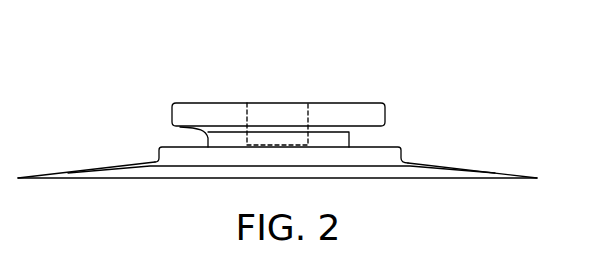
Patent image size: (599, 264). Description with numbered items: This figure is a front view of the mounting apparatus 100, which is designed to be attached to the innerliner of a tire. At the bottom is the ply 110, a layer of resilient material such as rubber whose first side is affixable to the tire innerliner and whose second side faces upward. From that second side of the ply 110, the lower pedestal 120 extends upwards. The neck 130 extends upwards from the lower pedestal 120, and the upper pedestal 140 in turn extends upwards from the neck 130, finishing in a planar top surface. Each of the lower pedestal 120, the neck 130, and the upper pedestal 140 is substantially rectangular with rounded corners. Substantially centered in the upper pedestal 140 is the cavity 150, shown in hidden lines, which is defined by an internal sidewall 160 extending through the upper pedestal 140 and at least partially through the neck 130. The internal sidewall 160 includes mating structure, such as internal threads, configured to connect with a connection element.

The mounting apparatus 100 is at (502, 62).
The ply 110 is at (68, 172).
The lower pedestal 120 is at (152, 160).
The neck 130 is at (349, 143).
The upper pedestal 140 is at (386, 108).
The cavity 150 is at (273, 72).
The internal sidewall 160 is at (299, 102).